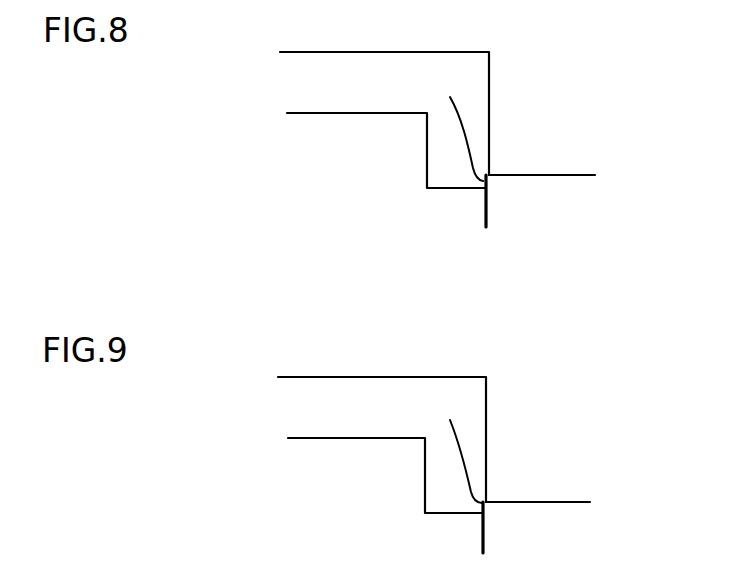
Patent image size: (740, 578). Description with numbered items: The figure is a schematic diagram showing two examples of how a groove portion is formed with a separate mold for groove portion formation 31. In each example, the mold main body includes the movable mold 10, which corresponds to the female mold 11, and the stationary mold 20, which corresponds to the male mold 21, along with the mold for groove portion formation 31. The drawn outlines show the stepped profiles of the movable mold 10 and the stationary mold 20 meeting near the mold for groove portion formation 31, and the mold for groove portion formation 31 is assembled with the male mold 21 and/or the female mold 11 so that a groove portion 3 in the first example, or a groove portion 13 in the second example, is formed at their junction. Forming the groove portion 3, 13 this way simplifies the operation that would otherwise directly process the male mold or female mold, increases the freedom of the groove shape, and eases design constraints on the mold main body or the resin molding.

In FIG. 8, the groove portion 3 is at (450, 97).
In FIG. 9, the groove portion 13 is at (450, 420).
In FIG. 8, the movable mold 10 is at (543, 88).
In FIG. 9, the movable mold 10 is at (542, 415).
In FIG. 8, the female mold 11 is at (456, 128).
In FIG. 9, the female mold 11 is at (450, 453).
In FIG. 8, the stationary mold 20 is at (398, 178).
In FIG. 9, the stationary mold 20 is at (392, 502).
In FIG. 8, the male mold 21 is at (386, 175).
In FIG. 9, the male mold 21 is at (385, 499).
In FIG. 8, the mold for groove portion formation 31 is at (542, 193).
In FIG. 9, the mold for groove portion formation 31 is at (542, 518).